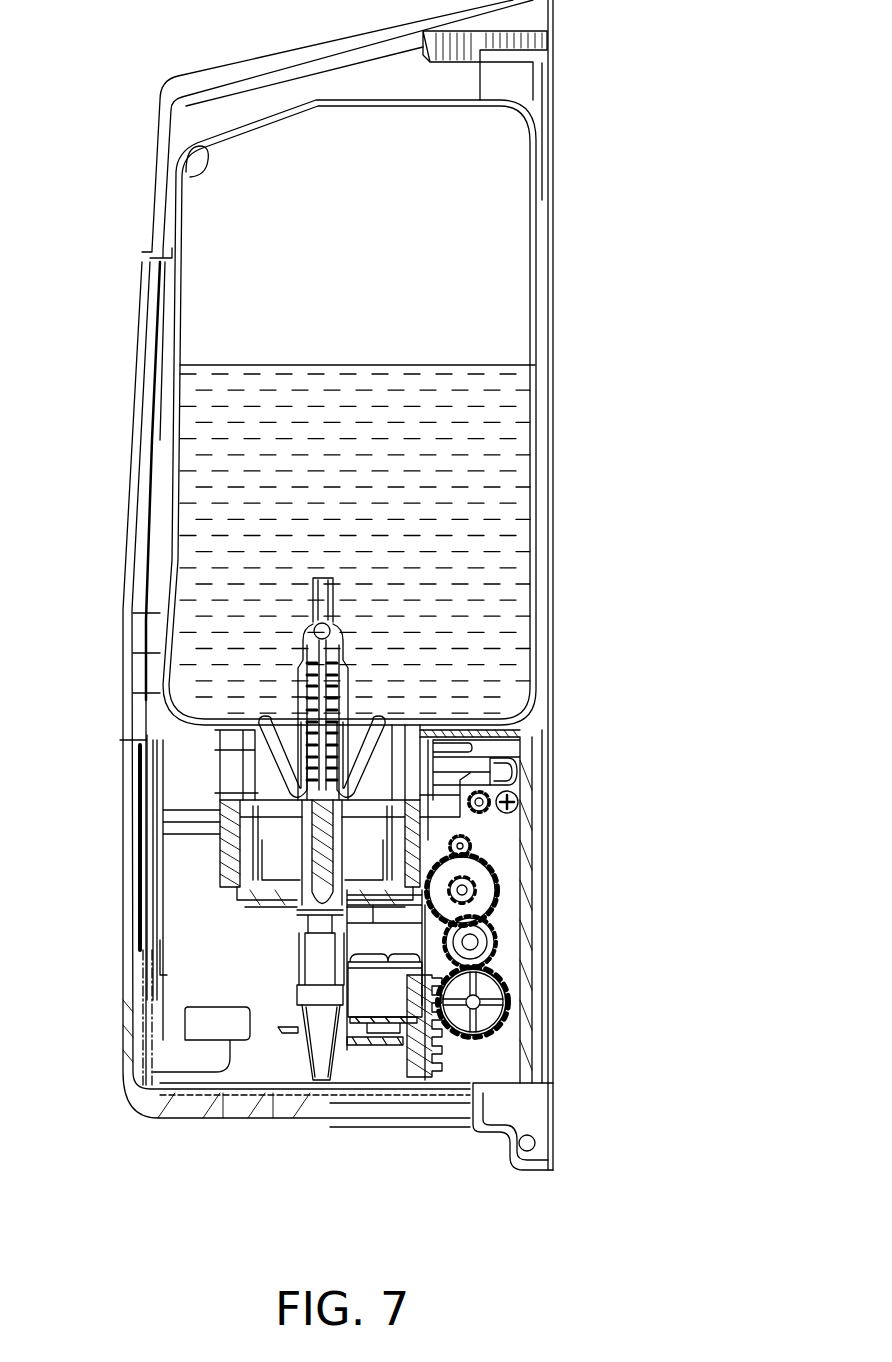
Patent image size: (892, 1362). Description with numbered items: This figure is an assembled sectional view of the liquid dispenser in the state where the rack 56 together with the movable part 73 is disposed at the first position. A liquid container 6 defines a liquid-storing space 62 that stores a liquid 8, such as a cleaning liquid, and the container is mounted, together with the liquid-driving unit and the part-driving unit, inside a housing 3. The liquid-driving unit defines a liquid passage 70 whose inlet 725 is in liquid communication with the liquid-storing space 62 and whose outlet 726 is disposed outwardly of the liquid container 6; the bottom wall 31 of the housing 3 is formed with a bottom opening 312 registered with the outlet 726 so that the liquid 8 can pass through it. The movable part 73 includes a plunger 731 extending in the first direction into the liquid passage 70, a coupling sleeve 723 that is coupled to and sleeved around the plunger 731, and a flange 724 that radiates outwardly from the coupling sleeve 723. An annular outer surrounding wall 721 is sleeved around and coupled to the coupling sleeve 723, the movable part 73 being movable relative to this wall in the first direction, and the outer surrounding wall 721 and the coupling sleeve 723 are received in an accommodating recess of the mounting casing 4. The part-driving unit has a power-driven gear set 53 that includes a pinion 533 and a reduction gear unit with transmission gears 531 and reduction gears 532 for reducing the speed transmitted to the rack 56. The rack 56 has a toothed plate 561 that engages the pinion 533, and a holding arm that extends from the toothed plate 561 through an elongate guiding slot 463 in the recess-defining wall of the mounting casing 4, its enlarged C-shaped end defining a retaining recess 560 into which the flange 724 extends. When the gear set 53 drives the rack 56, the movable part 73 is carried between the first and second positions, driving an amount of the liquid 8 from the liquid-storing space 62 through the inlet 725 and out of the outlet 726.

The housing 3 is at (153, 185).
The mounting casing 4 is at (515, 727).
The liquid container 6 is at (263, 107).
The liquid 8 is at (432, 372).
The bottom wall 31 is at (152, 1108).
The gear set 53 is at (505, 890).
The rack 56 is at (393, 1048).
The liquid-storing space 62 is at (205, 172).
The liquid passage 70 is at (305, 750).
The movable part 73 is at (299, 946).
The bottom opening 312 is at (315, 1103).
The elongate guiding slot 463 is at (497, 945).
The transmission gears 531 is at (505, 925).
The reduction gears 532 is at (470, 788).
The pinion 533 is at (507, 990).
The retaining recess 560 is at (380, 1030).
The toothed plate 561 is at (422, 1080).
The outer surrounding wall 721 is at (222, 866).
The coupling sleeve 723 is at (299, 966).
The flange 724 is at (283, 1027).
The inlet 725 is at (322, 587).
The outlet 726 is at (318, 1080).
The plunger 731 is at (318, 812).